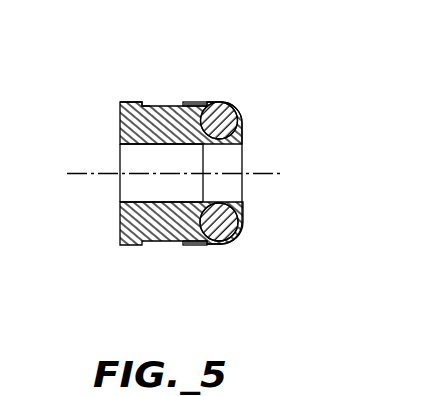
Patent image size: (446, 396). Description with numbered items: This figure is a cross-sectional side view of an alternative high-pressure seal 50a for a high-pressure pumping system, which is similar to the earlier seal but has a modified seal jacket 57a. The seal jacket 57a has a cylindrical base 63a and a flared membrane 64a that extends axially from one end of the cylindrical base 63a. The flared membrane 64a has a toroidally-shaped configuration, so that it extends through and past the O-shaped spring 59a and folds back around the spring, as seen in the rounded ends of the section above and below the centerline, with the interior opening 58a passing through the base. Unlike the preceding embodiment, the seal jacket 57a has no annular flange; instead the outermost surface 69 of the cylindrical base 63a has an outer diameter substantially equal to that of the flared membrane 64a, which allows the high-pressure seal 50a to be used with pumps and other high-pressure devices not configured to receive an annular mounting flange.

The high-pressure seal 50a is at (172, 147).
The seal jacket 57a is at (112, 128).
The bore 58a is at (140, 146).
The O-shaped spring 59a is at (243, 229).
The cylindrical base 63a is at (127, 218).
The flared membrane 64a is at (245, 114).
The outermost surface 69 is at (128, 102).